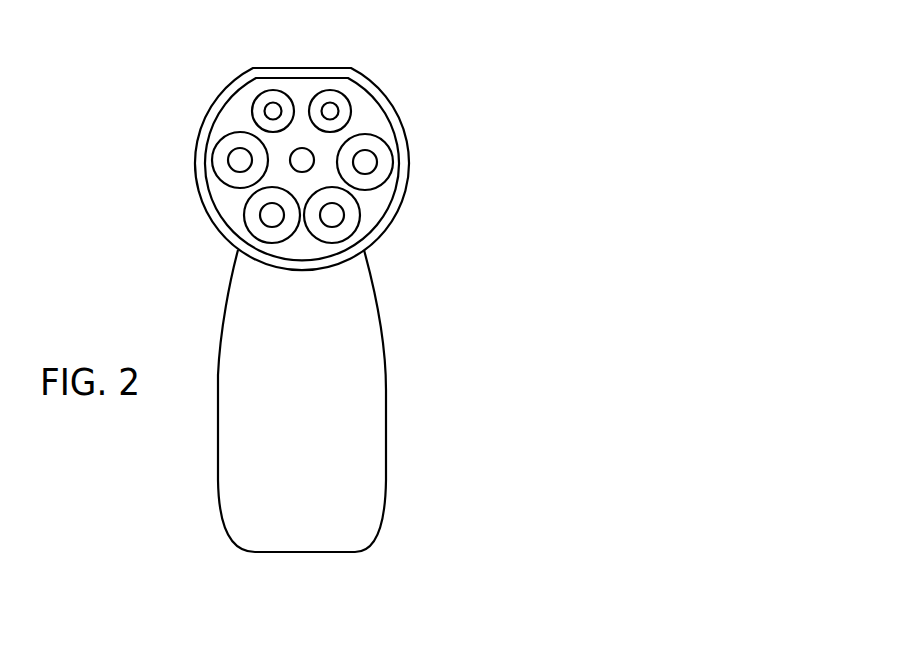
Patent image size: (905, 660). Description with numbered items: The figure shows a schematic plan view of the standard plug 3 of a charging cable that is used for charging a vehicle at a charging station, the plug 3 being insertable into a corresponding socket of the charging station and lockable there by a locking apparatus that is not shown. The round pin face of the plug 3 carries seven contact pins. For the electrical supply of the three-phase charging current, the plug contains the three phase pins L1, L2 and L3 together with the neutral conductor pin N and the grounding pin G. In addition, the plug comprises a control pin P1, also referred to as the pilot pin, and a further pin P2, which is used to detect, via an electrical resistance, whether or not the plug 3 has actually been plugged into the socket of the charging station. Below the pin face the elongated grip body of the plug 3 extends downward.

The plug 3 is at (430, 400).
The control pin P1 is at (330, 106).
The detection pin P2 is at (273, 106).
The grounding pin G is at (303, 160).
The neutral conductor pin N is at (365, 162).
The pin L1 is at (239, 160).
The pin L2 is at (271, 215).
The pin L3 is at (333, 215).